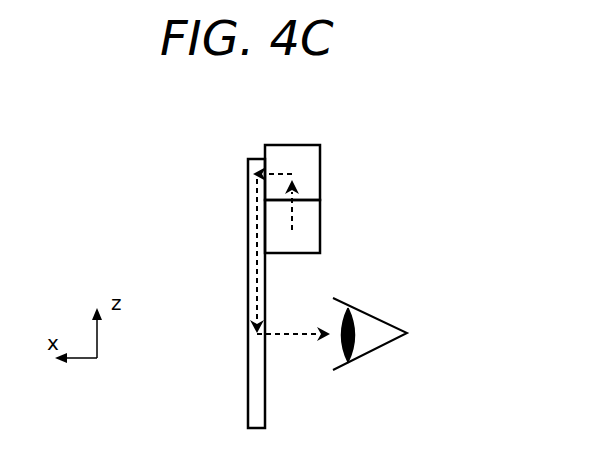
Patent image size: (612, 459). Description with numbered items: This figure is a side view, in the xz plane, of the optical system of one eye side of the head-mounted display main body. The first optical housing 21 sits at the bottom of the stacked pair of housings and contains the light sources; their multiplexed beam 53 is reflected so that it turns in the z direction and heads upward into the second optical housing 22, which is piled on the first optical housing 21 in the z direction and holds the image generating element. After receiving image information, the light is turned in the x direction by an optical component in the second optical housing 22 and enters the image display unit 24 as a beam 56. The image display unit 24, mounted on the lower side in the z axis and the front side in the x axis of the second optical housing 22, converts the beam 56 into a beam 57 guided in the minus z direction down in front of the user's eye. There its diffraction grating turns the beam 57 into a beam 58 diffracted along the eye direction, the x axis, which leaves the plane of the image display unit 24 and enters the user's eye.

The first optical housing 21 is at (323, 230).
The second optical housing 22 is at (323, 168).
The image display unit 24 is at (250, 387).
The multiplexed beam 53 is at (295, 213).
The beam entering the image display unit 56 is at (280, 173).
The beam guided in the −z direction 57 is at (257, 287).
The beam diffracted to the eye direction 58 is at (285, 335).